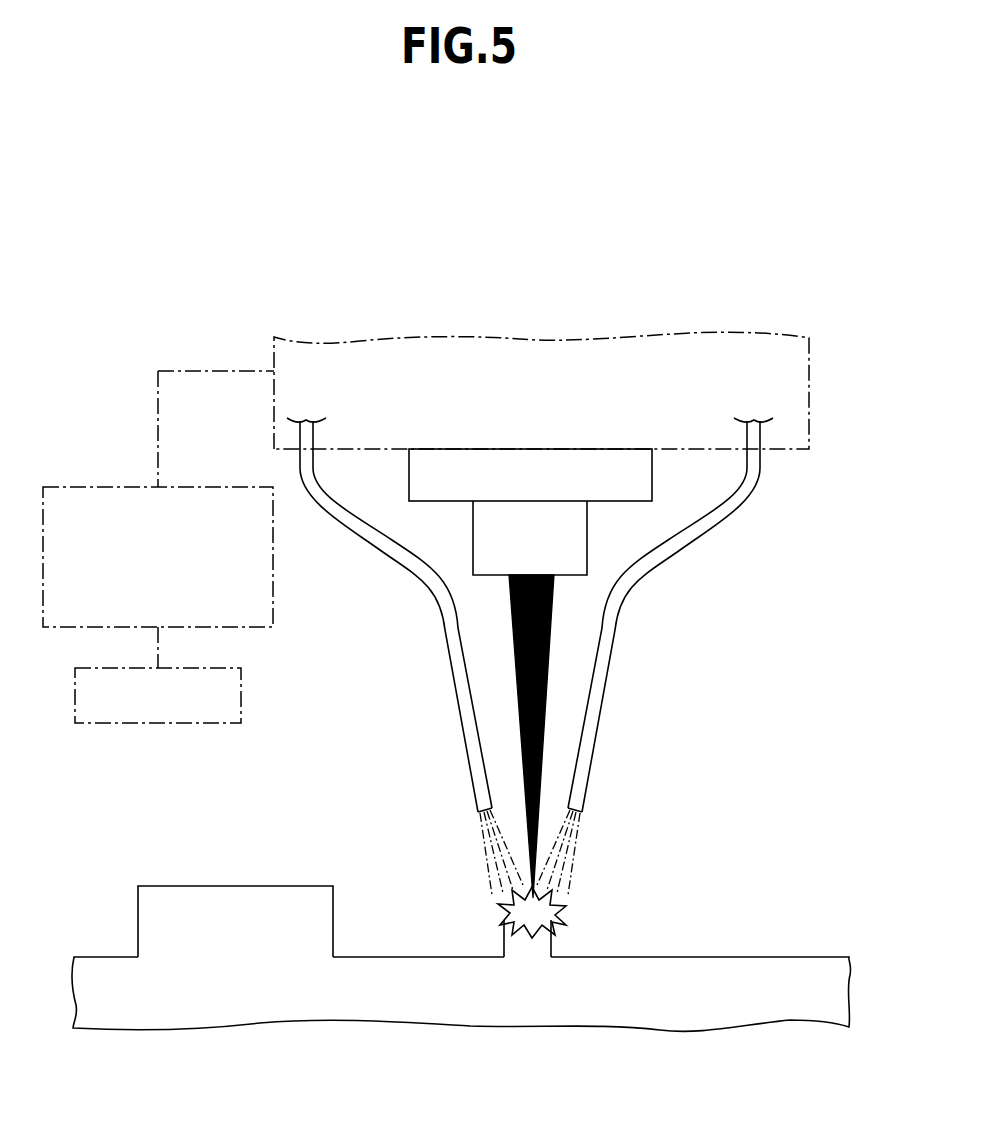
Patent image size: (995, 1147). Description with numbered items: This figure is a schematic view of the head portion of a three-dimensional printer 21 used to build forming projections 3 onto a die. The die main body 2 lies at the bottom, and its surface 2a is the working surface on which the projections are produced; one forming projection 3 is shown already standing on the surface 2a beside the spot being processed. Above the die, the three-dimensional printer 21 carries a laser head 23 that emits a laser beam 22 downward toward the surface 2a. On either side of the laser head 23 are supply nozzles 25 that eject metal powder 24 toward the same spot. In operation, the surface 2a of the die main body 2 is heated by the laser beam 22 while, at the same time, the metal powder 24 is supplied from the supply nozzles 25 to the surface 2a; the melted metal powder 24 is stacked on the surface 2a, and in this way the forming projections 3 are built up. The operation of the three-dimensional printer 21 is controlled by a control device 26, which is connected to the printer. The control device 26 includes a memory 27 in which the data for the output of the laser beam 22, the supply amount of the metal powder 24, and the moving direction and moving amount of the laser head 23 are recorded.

The die main body 2 is at (760, 1012).
The surface of the die main body 2a is at (730, 957).
The forming projection 3 is at (232, 897).
The 3D printer 21 is at (272, 352).
The laser beam 22 is at (543, 728).
The laser head 23 is at (655, 477).
The metal powder 24 is at (577, 878).
The supply nozzle 25 is at (443, 652).
The control device 26 is at (273, 567).
The memory 27 is at (241, 692).